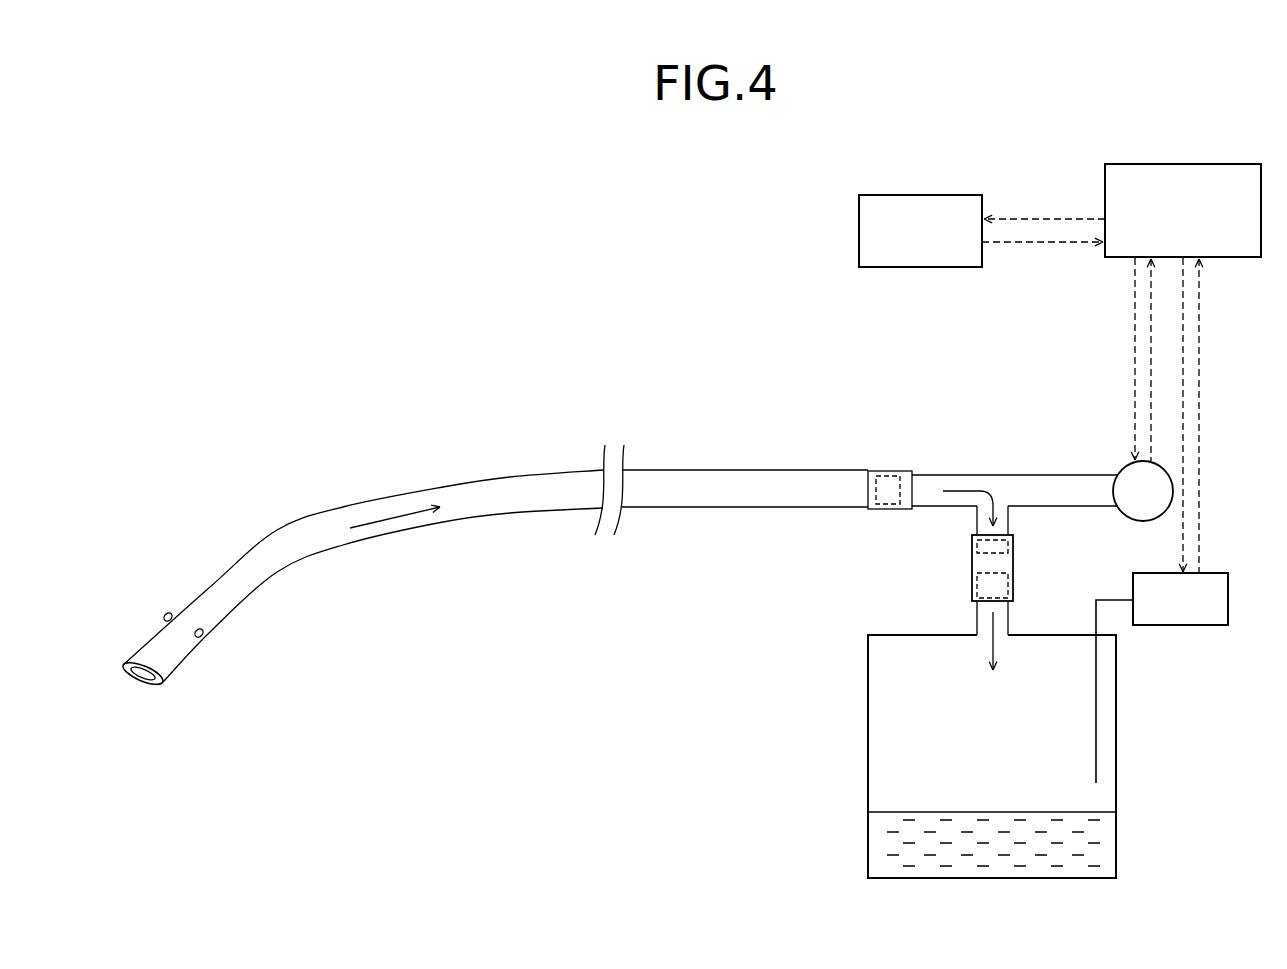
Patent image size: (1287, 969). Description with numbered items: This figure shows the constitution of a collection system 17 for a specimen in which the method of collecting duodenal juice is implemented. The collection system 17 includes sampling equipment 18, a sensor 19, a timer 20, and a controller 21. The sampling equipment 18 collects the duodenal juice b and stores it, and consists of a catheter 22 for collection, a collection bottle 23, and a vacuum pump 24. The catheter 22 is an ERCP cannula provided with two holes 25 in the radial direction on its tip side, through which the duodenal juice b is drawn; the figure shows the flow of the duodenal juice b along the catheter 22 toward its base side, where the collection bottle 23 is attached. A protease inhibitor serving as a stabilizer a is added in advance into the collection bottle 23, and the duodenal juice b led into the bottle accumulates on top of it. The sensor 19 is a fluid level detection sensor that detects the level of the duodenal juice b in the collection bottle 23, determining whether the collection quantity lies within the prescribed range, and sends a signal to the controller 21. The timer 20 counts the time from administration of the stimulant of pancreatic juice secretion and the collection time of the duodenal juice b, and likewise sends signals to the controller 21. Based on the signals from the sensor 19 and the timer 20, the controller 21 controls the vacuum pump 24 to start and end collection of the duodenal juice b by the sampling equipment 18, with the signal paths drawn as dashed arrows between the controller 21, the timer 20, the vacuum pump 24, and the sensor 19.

The collection system 17 is at (702, 190).
The sampling equipment 18 is at (735, 640).
The sensor 19 is at (1228, 600).
The timer 20 is at (935, 195).
The controller 21 is at (1195, 164).
The catheter for collection 22 is at (513, 486).
The collection bottle 23 is at (1116, 715).
The vacuum pump 24 is at (1163, 467).
The holes 25 is at (203, 636).
The stabilizer a is at (1105, 836).
The duodenal juice b is at (377, 523).